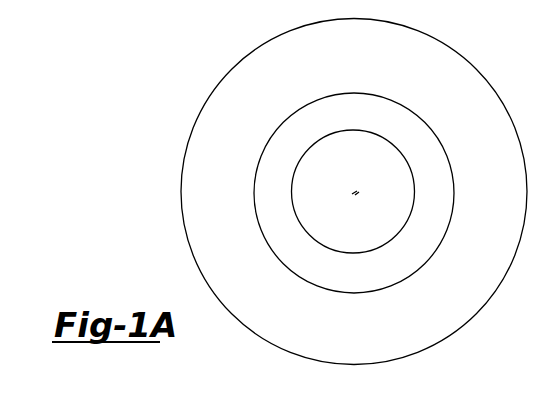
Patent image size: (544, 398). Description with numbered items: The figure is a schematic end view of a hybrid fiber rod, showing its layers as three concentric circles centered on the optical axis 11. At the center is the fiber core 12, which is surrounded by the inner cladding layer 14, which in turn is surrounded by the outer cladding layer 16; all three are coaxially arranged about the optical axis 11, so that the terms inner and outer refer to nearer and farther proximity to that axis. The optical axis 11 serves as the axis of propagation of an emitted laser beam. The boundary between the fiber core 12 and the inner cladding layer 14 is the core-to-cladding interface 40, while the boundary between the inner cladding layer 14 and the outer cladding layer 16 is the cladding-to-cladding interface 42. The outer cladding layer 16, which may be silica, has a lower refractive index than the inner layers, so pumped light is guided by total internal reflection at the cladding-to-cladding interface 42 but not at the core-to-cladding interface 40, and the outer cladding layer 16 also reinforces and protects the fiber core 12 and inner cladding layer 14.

The optical axis 11 is at (333, 207).
The fiber core 12 is at (360, 170).
The inner cladding layer 14 is at (360, 116).
The outer cladding layer 16 is at (360, 61).
The core-to-cladding interface 40 is at (377, 213).
The cladding-to-cladding interface 42 is at (364, 186).